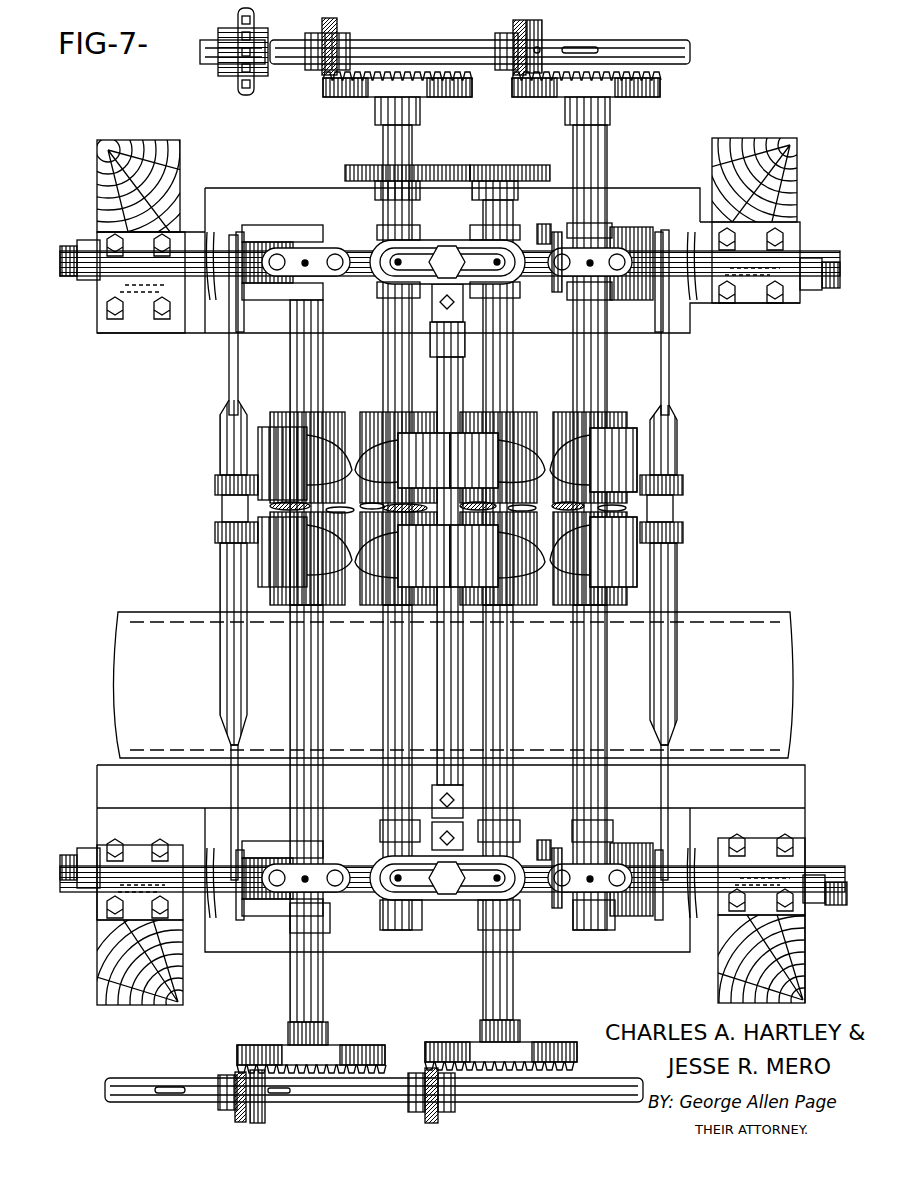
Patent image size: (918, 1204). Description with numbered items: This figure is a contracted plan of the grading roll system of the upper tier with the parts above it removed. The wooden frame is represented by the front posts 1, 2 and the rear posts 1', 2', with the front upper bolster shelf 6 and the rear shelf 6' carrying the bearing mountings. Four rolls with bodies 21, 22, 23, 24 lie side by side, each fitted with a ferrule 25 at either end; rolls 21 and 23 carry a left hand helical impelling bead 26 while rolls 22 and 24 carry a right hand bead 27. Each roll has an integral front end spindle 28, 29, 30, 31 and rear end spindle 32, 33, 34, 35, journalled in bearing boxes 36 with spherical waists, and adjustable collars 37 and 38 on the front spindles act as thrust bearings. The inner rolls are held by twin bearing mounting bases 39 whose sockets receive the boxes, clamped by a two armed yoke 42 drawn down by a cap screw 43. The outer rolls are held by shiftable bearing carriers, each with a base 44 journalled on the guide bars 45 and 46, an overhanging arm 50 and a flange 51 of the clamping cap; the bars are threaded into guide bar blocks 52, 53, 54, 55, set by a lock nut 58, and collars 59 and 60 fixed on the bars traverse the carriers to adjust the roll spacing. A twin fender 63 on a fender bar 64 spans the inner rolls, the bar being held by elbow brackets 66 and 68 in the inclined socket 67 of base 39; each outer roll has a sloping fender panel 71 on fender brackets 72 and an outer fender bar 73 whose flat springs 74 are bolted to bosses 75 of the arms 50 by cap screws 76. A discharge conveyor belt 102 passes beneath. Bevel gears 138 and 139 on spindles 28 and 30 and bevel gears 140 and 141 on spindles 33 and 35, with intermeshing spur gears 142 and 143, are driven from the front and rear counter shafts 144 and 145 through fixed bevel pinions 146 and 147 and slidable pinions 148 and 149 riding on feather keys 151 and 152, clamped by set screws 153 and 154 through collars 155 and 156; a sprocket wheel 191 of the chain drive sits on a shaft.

The post 1 is at (803, 1000).
The post 2 is at (167, 1002).
The post 1' is at (790, 145).
The post 2' is at (108, 150).
The upper bolster shelf 6 is at (451, 884).
The upper bolster shelf 6' is at (448, 249).
The left hand outer roll 21 is at (313, 502).
The right hand inner roll 22 is at (404, 502).
The left hand inner roll 23 is at (504, 501).
The right hand outer roll 24 is at (589, 501).
The ferrule 25 is at (275, 412).
The left hand helical impelling bead 26 is at (338, 425).
The right hand helical impelling bead 27 is at (358, 430).
The front end spindle 28 is at (325, 1005).
The front end spindle 29 is at (392, 715).
The front end spindle 30 is at (490, 990).
The front end spindle 31 is at (604, 730).
The rear end spindle 32 is at (292, 348).
The rear end spindle 33 is at (390, 348).
The rear end spindle 34 is at (513, 358).
The rear end spindle 35 is at (600, 355).
The bearing box 36 is at (294, 200).
The adjustable collar 37 is at (292, 940).
The adjustable collar 38 is at (385, 820).
The base 39 is at (430, 240).
The two armed yoke 42 is at (462, 250).
The cap screw 43 is at (428, 977).
The base 44 is at (290, 228).
The guide bar 45 is at (832, 288).
The guide bar 46 is at (68, 262).
The overhanging arm 50 is at (628, 245).
The flange 51 is at (447, 568).
The guide bar block 52 is at (761, 874).
The guide bar block 53 is at (140, 879).
The guide bar block 54 is at (756, 262).
The guide bar block 55 is at (141, 282).
The lock nut 58 is at (85, 238).
The collar 59 is at (556, 298).
The collar 60 is at (240, 235).
The twin fender 63 is at (474, 628).
The fender bar 64 is at (440, 660).
The elbow bracket 66 is at (435, 795).
The inclined socket 67 is at (435, 310).
The elbow bracket 68 is at (434, 358).
The sloping fender panel 71 is at (262, 588).
The fender bracket 72 is at (215, 532).
The outer fender bar 73 is at (680, 455).
The flat spring 74 is at (232, 378).
The boss 75 is at (240, 300).
The cap screw 76 is at (212, 292).
The belt 102 is at (118, 658).
The bevel gear 138 is at (311, 1059).
The bevel gear 139 is at (501, 1056).
The bevel gear 140 is at (397, 98).
The bevel gear 141 is at (586, 98).
The spur gear 142 is at (372, 170).
The spur gear 143 is at (545, 158).
The front counter shaft 144 is at (105, 1092).
The rear counter shaft 145 is at (690, 52).
The fixed bevel pinion 146 is at (436, 1118).
The fixed bevel pinion 147 is at (336, 30).
The slidable bevel pinion 148 is at (236, 1112).
The slidable bevel pinion 149 is at (514, 25).
The feather key 151 is at (170, 1098).
The feather key 152 is at (584, 45).
The set screw 153 is at (280, 1100).
The set screw 154 is at (538, 46).
The collar 155 is at (256, 1120).
The collar 156 is at (536, 22).
The sprocket wheel 191 is at (247, 92).